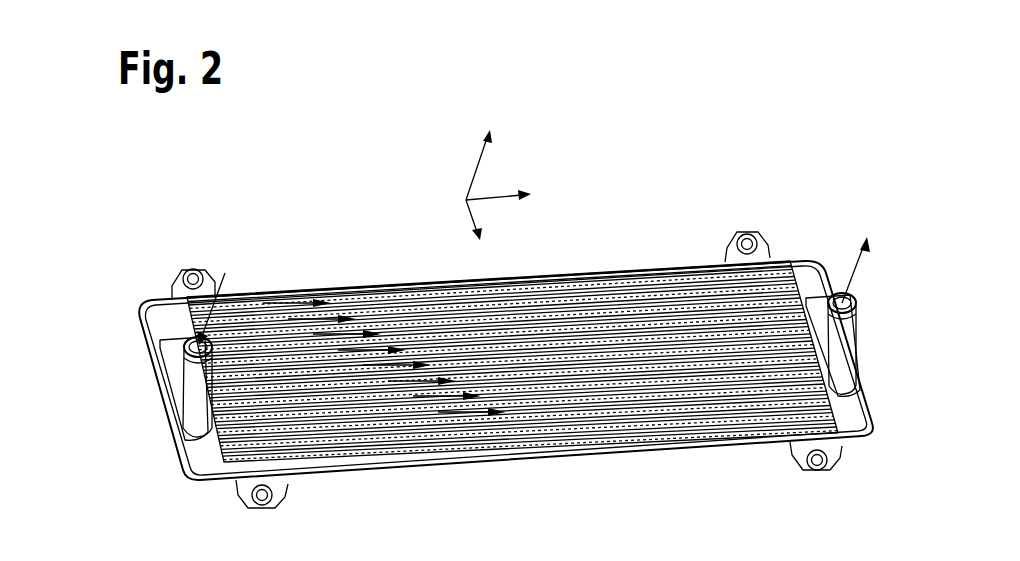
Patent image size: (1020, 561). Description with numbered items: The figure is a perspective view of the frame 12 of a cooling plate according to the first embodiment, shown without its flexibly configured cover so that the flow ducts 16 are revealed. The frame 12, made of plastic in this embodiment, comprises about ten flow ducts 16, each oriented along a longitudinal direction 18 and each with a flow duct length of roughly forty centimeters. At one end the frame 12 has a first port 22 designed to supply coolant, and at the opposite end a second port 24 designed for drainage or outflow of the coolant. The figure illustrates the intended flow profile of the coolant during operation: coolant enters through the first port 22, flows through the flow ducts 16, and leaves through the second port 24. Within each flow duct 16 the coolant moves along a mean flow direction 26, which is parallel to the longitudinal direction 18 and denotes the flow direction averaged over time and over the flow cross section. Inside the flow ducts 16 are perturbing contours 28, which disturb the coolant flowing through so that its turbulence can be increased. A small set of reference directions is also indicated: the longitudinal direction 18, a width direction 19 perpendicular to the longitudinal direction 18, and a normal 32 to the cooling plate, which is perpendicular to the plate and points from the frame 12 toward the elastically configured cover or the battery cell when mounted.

The frame 12 is at (155, 250).
The flow ducts 16 is at (370, 457).
The longitudinal direction 18 is at (497, 196).
The width direction 19 is at (466, 206).
The first port 22 is at (183, 368).
The second port 24 is at (853, 327).
The mean flow direction 26 is at (505, 433).
The perturbing contours 28 is at (678, 435).
The normal to the cooling plate 32 is at (475, 168).